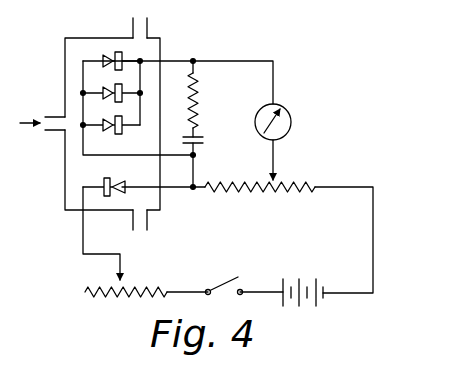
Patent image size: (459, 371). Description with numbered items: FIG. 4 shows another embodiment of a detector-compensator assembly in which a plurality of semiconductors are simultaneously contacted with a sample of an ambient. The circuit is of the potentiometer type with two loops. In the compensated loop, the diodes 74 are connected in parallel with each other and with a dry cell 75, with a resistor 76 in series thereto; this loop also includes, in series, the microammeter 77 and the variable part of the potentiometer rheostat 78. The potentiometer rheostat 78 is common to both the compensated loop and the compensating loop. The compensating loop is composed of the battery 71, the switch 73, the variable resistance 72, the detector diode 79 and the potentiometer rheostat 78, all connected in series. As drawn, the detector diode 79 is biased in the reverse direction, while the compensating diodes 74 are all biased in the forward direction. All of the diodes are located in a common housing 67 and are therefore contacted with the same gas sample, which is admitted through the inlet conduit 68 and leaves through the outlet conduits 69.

The common housing 67 is at (115, 35).
The outlet conduits 69 is at (152, 26).
The inlet conduit 68 is at (54, 136).
The diodes 74 is at (125, 58).
The resistor 76 is at (197, 95).
The dry cell 75 is at (200, 144).
The microammeter 77 is at (292, 121).
The potentiometer rheostat 78 is at (278, 193).
The detector diode 79 is at (117, 185).
The variable resistance 72 is at (118, 297).
The switch 73 is at (221, 282).
The battery 71 is at (303, 280).